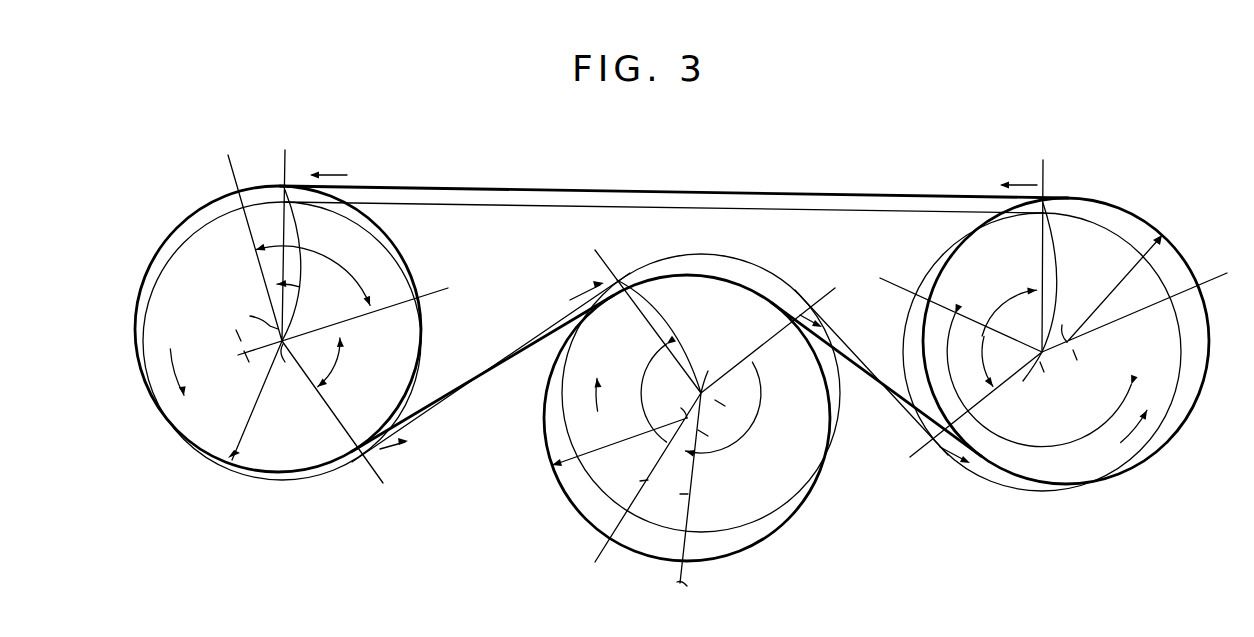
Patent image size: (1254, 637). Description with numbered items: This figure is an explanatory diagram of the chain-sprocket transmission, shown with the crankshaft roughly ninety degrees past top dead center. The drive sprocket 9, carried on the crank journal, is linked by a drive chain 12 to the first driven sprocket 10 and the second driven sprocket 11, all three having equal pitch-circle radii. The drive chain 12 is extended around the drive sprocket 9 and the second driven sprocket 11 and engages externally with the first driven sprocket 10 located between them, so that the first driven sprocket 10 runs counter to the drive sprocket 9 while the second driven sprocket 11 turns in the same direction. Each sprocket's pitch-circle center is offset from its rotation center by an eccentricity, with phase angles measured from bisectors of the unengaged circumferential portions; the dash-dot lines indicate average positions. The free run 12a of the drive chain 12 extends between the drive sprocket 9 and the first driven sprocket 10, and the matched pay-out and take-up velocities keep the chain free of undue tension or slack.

The drive sprocket 9 is at (178, 225).
The first driven sprocket 10 is at (576, 511).
The second driven sprocket 11 is at (1180, 250).
The drive chain 12 is at (621, 192).
The free run 12a is at (483, 373).